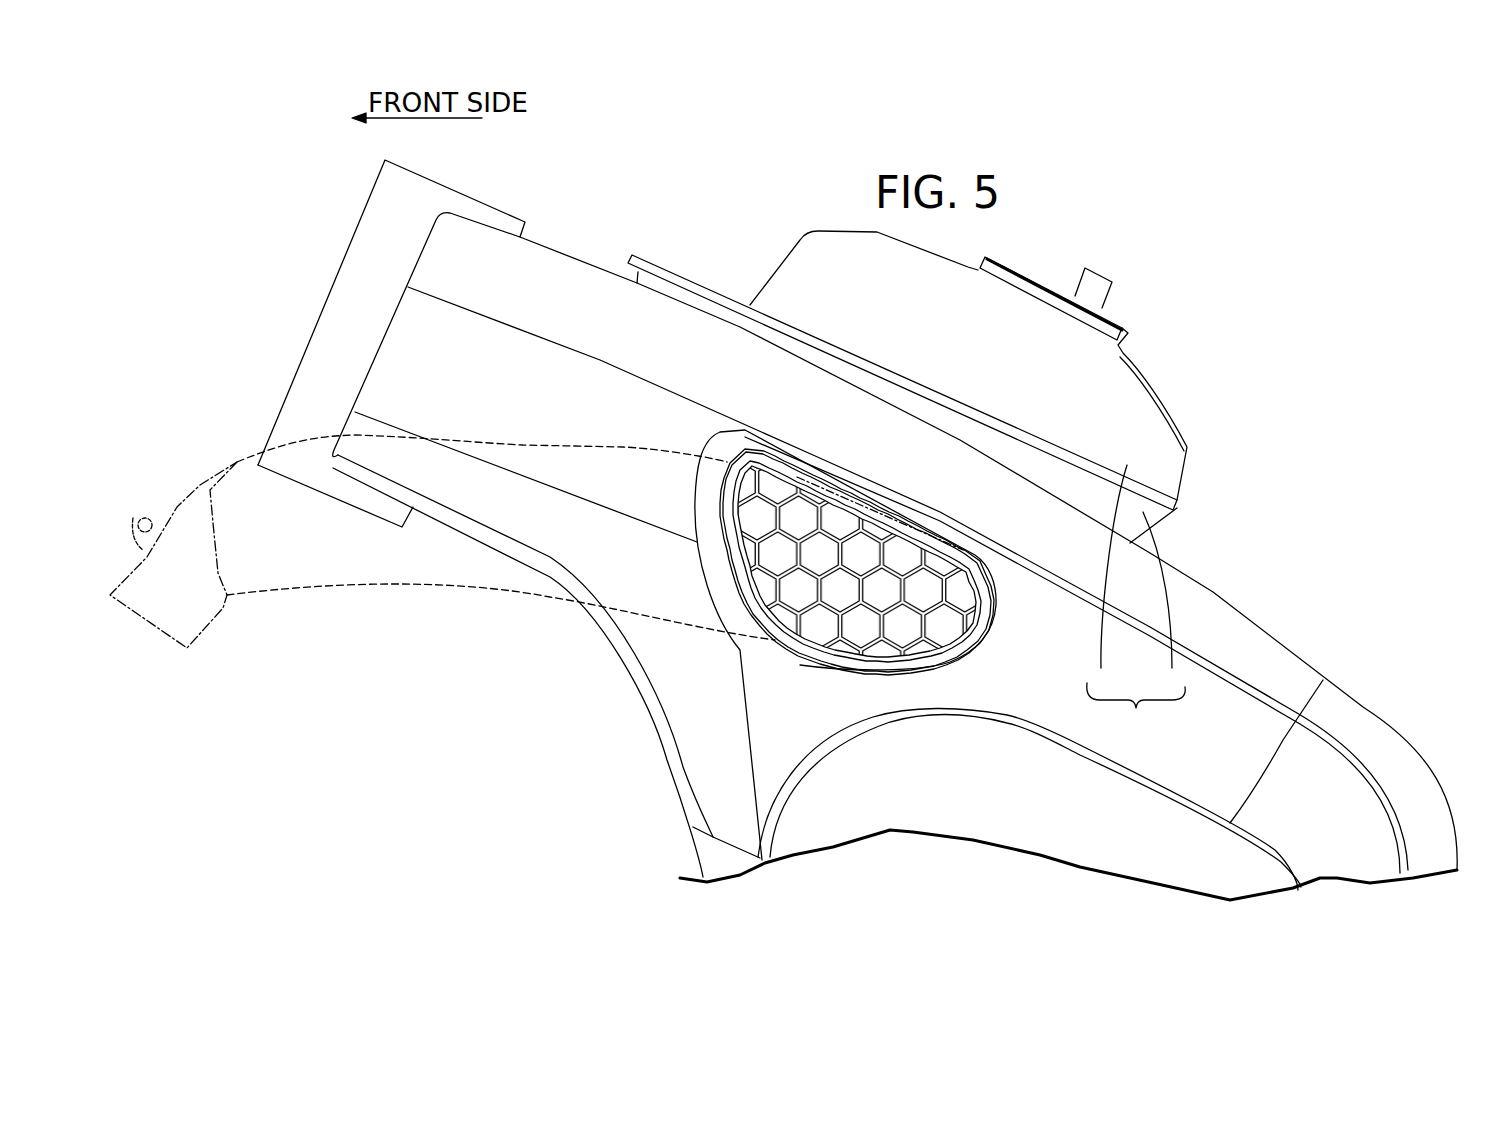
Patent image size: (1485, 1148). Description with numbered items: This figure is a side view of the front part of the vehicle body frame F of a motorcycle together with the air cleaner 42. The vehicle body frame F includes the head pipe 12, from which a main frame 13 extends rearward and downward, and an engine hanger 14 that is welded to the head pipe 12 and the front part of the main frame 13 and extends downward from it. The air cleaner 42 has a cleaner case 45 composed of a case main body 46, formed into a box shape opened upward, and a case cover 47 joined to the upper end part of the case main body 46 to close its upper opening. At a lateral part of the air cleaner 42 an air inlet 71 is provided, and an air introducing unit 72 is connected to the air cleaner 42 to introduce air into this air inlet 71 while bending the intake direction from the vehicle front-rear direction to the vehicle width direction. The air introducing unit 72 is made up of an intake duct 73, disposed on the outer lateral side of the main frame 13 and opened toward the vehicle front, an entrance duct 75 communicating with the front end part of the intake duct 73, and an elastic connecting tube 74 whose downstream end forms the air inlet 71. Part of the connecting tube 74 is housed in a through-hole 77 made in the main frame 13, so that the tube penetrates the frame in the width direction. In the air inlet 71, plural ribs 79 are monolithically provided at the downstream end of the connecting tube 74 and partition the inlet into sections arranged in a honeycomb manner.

The head pipe 12 is at (335, 287).
The main frame 13 is at (1291, 657).
The engine hanger 14 is at (693, 715).
The air cleaner 42 is at (1188, 467).
The cleaner case 45 is at (1136, 716).
The case main body 46 is at (1164, 607).
The case cover 47 is at (1106, 583).
The air inlet 71 is at (967, 598).
The air introducing unit 72 is at (523, 443).
The intake duct 73 is at (620, 447).
The connecting tube 74 is at (940, 525).
The entrance duct 75 is at (235, 462).
The through-hole 77 is at (845, 505).
The rib 79 is at (907, 653).
The vehicle body frame F is at (1213, 594).